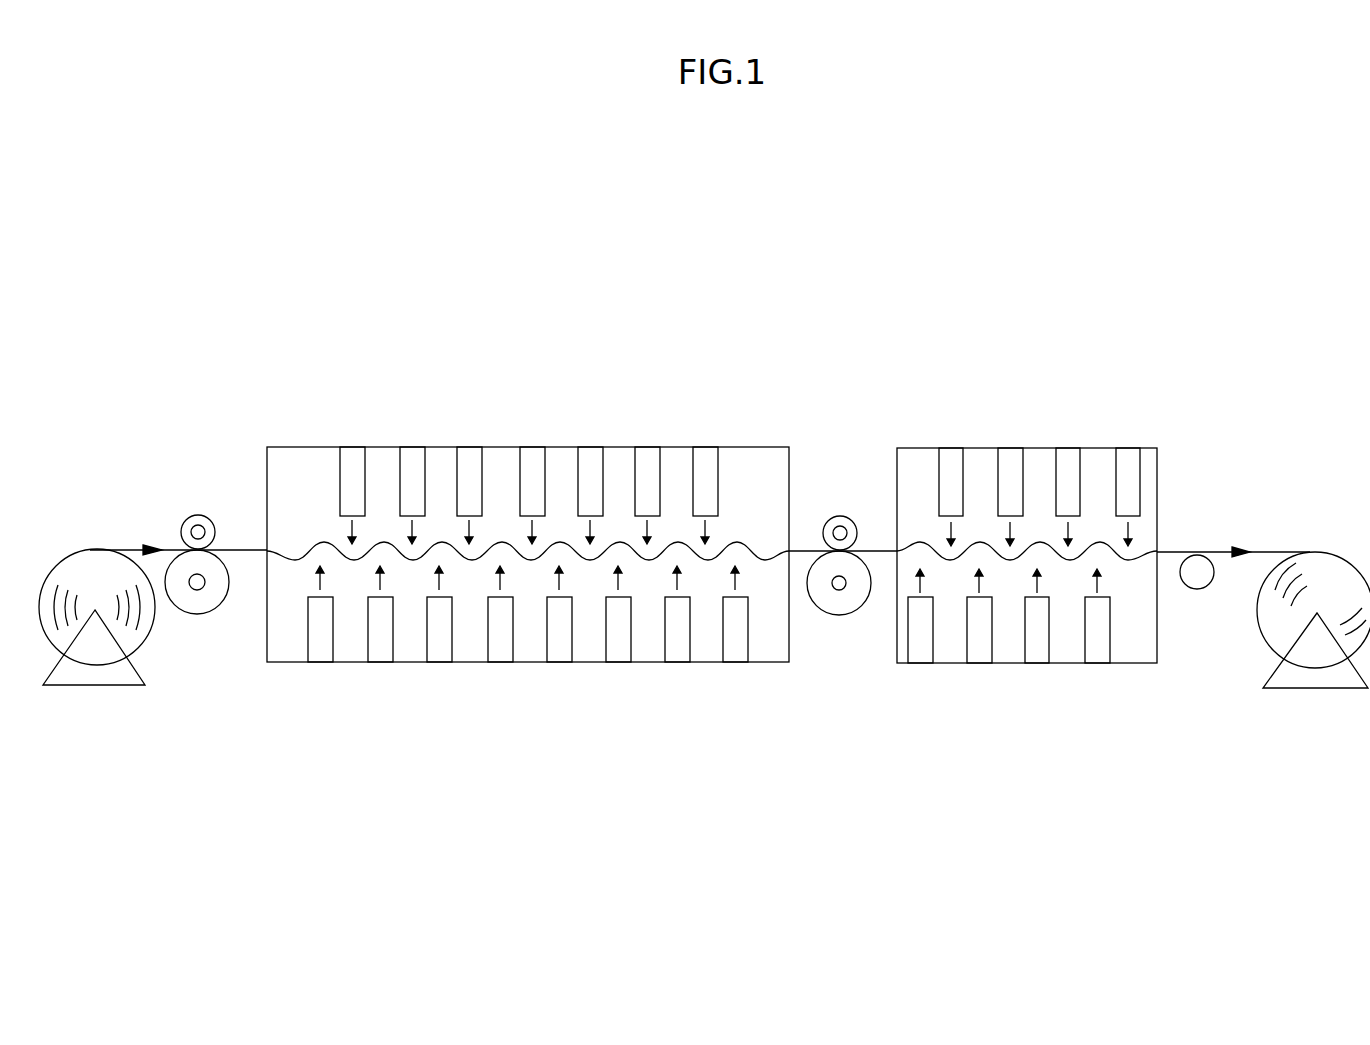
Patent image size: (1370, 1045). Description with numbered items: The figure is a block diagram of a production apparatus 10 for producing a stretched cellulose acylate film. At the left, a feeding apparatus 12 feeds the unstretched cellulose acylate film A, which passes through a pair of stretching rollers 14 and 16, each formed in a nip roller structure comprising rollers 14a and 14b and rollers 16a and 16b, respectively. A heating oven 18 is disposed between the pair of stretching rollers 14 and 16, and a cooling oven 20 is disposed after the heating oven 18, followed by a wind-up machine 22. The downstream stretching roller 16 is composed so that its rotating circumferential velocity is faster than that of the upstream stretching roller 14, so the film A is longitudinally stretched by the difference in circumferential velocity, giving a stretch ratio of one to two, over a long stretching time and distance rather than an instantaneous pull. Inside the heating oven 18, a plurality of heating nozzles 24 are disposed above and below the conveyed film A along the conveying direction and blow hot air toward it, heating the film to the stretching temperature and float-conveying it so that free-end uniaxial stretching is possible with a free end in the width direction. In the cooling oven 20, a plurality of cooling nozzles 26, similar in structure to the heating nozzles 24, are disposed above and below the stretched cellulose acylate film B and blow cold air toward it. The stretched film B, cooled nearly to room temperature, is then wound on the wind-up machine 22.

The production apparatus 10 is at (868, 330).
The feeding apparatus 12 is at (100, 673).
The stretching roller 14 is at (199, 546).
The nip roller 14a is at (203, 515).
The nip roller 14b is at (197, 607).
The stretching roller 16 is at (852, 546).
The nip roller 16a is at (840, 515).
The nip roller 16b is at (838, 607).
The heating oven 18 is at (528, 516).
The cooling oven 20 is at (1027, 544).
The wind-up machine 22 is at (1315, 677).
The heating nozzles 24 is at (367, 467).
The cooling nozzles 26 is at (955, 465).
The unstretched cellulose acylate film A is at (130, 548).
The stretched cellulose acylate film B is at (1297, 553).